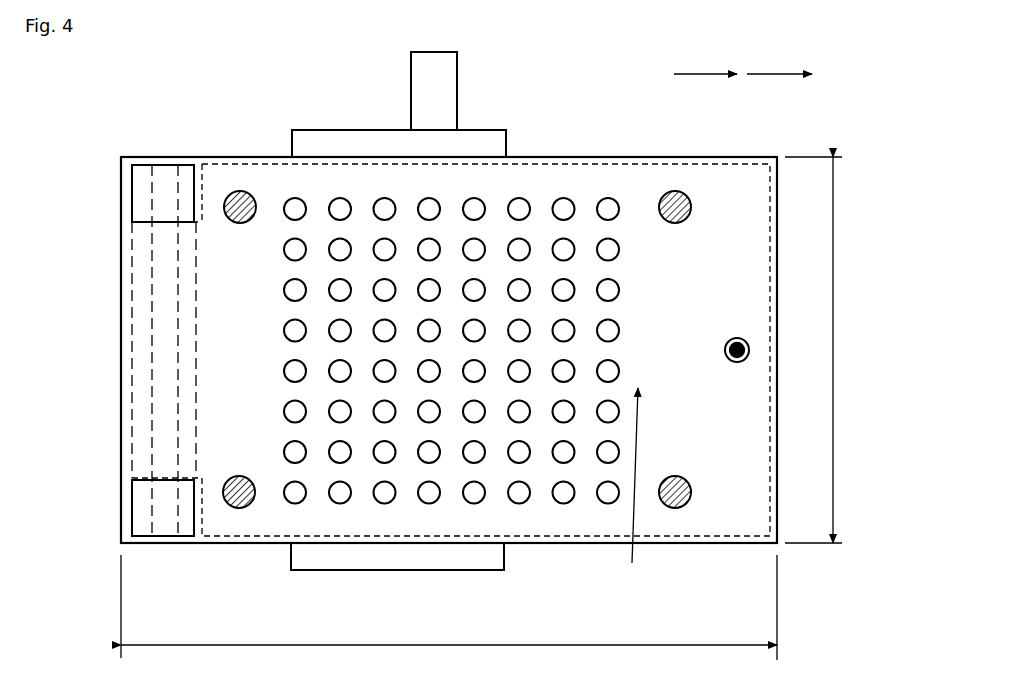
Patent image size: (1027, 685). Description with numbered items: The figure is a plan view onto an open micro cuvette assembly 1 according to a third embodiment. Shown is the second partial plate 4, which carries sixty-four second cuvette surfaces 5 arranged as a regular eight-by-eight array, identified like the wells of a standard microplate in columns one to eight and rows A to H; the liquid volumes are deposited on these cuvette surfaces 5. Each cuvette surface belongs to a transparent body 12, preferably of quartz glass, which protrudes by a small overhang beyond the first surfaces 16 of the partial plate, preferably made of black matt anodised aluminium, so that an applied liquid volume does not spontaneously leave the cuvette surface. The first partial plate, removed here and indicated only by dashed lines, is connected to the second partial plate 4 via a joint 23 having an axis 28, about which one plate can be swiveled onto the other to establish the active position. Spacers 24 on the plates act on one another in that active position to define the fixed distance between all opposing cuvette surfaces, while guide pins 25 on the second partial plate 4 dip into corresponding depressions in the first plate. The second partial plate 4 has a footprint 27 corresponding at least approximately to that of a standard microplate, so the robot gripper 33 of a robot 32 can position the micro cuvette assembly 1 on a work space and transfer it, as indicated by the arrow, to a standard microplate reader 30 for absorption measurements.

The micro cuvette assembly 1 is at (140, 146).
The second partial plate 4 is at (451, 350).
The second cuvette surfaces 5 is at (475, 284).
The transparent body 12 is at (429, 370).
The first surfaces 16 is at (635, 500).
The joint 23 is at (164, 516).
The spacers 24 is at (249, 196).
The guide pins 25 is at (738, 338).
The footprint 27 is at (481, 408).
The axis 28 is at (163, 263).
The standard microplate reader 30 is at (718, 74).
The robot 32 is at (434, 91).
The robot gripper 33 is at (375, 141).